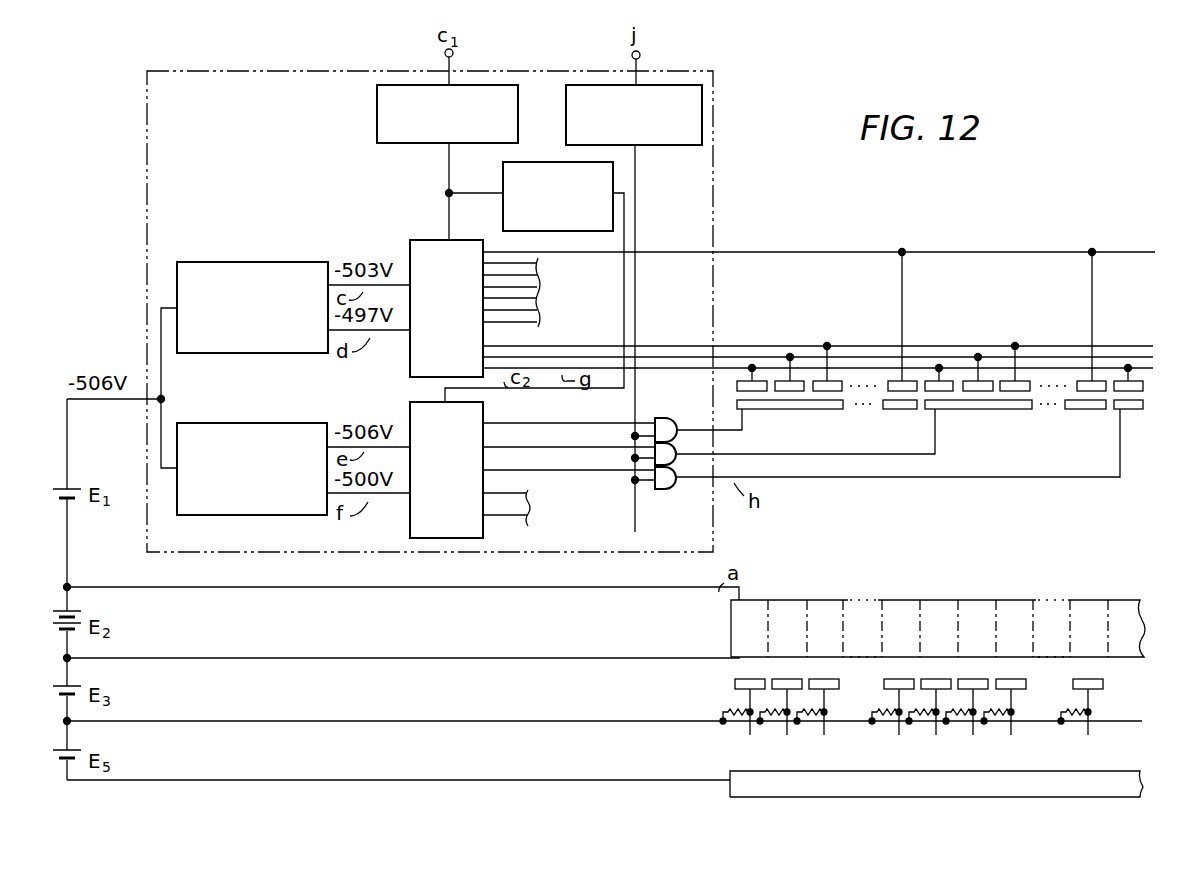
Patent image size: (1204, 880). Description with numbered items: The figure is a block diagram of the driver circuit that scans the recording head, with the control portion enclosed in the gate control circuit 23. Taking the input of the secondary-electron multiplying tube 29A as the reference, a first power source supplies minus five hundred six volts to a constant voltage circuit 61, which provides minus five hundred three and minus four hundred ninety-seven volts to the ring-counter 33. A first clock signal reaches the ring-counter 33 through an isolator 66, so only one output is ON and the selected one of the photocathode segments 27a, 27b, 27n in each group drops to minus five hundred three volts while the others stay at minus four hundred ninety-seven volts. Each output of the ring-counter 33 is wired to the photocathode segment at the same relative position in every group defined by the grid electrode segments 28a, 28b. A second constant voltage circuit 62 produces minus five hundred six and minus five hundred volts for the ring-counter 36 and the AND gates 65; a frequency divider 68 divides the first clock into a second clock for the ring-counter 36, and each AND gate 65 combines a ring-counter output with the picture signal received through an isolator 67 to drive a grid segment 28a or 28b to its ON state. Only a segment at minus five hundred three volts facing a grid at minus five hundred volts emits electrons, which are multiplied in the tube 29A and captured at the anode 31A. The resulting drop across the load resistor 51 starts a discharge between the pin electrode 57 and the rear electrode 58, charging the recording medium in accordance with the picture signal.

The gate control circuit 23 is at (713, 215).
The photocathode segment 27a is at (758, 380).
The photocathode segment 27b is at (802, 381).
The photocathode segment 27n is at (908, 381).
The grid electrode segment 28a is at (800, 410).
The grid electrode segment 28b is at (1000, 410).
The secondary-electron multiplying tube 29A is at (947, 600).
The anode 31A is at (735, 684).
The ring-counter 33 is at (410, 240).
The ring-counter 36 is at (410, 402).
The load resistor 51 is at (723, 712).
The pin electrode 57 is at (750, 736).
The rear electrode 58 is at (838, 771).
The constant voltage circuit 61 is at (262, 262).
The constant voltage circuit 62 is at (260, 423).
The AND gate 65 is at (665, 489).
The isolator 66 is at (400, 145).
The isolator 67 is at (672, 147).
The frequency divider 68 is at (545, 162).